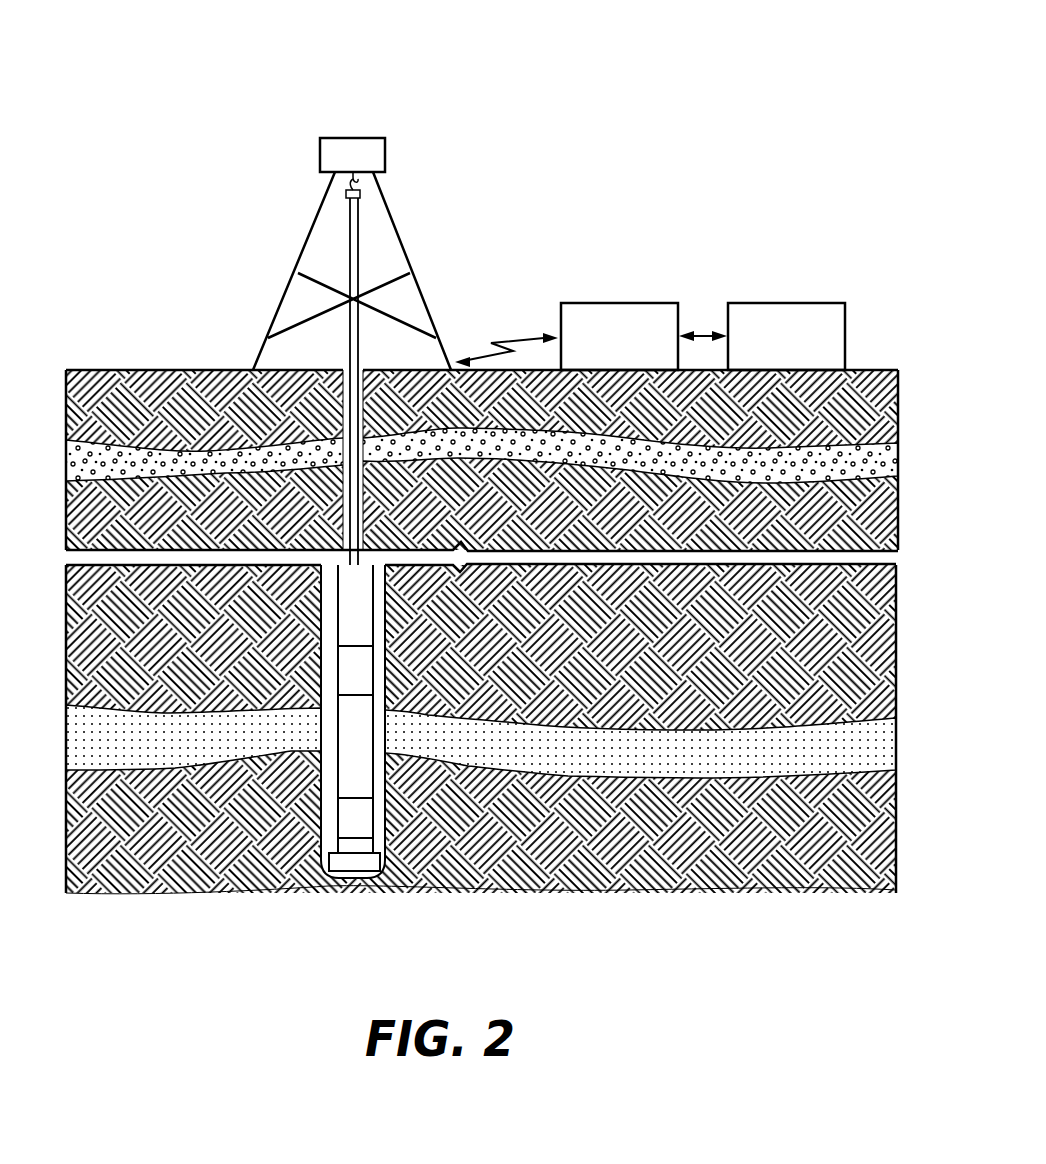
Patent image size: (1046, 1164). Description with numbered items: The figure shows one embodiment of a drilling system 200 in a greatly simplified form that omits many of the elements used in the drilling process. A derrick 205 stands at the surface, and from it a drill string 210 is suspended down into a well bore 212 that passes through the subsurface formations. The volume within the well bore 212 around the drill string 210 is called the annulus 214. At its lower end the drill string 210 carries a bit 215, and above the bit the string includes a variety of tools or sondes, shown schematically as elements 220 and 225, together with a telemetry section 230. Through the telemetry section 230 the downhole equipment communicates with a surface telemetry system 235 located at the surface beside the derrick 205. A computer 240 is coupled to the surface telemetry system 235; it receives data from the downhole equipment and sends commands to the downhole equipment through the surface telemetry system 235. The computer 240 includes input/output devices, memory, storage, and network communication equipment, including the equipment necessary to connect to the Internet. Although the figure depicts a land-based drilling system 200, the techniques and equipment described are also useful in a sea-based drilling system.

The drilling system 200 is at (640, 52).
The derrick 205 is at (355, 130).
The drill string 210 is at (351, 247).
The well bore 212 is at (353, 362).
The annulus 214 is at (374, 668).
The bit 215 is at (343, 856).
The tool or sonde 220 is at (330, 808).
The tool or sonde 225 is at (366, 773).
The telemetry section 230 is at (330, 667).
The surface telemetry system 235 is at (605, 295).
The computer 240 is at (807, 295).